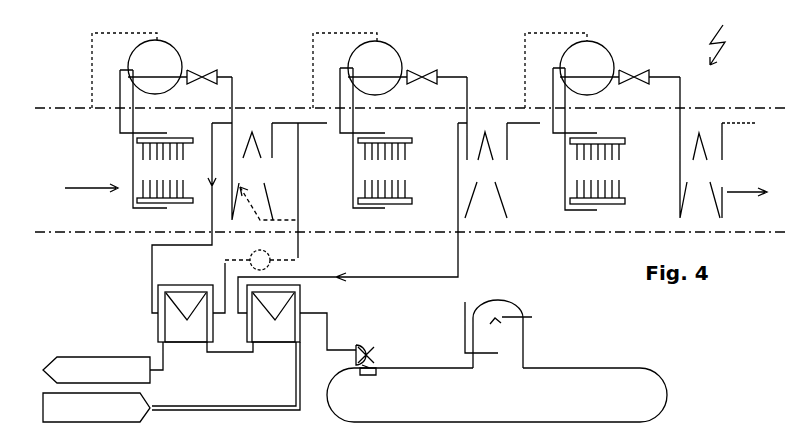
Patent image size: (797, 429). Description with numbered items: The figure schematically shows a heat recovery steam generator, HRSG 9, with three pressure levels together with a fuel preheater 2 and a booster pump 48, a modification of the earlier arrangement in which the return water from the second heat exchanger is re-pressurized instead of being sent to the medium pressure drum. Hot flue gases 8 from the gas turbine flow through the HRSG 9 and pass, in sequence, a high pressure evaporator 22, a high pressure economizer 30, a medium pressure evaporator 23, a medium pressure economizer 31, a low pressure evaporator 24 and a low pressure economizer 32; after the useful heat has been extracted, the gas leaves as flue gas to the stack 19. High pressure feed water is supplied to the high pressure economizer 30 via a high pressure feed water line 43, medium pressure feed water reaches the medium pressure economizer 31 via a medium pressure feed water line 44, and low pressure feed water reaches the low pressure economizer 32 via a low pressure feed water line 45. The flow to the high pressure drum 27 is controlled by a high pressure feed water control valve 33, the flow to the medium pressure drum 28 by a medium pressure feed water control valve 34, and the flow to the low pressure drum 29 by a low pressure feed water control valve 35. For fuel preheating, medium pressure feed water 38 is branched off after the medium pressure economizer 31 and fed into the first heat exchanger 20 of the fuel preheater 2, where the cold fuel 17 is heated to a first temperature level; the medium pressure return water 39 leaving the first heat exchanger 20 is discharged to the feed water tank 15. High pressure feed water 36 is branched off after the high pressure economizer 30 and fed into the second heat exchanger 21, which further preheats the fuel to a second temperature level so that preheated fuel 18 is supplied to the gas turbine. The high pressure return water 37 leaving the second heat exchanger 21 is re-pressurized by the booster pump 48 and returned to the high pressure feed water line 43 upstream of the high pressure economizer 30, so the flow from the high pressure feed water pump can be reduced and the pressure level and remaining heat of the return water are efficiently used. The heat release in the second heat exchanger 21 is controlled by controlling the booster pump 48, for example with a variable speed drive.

The fuel preheater 2 is at (224, 386).
The hot flue gases 8 is at (91, 175).
The HRSG 9 is at (739, 31).
The feed water tank 15 is at (497, 361).
The fuel 17 is at (96, 407).
The preheated fuel 18 is at (96, 370).
The flue gas to the stack 19 is at (747, 180).
The first heat exchanger 20 is at (273, 326).
The second heat exchanger 21 is at (185, 326).
The high pressure evaporator 22 is at (156, 139).
The medium pressure evaporator 23 is at (376, 138).
The low pressure evaporator 24 is at (589, 139).
The high pressure drum 27 is at (137, 70).
The medium pressure drum 28 is at (357, 70).
The low pressure drum 29 is at (569, 70).
The high pressure economizer 30 is at (252, 148).
The medium pressure economizer 31 is at (486, 147).
The low pressure economizer 32 is at (701, 147).
The high pressure feed water control valve 33 is at (207, 64).
The medium pressure feed water control valve 34 is at (434, 64).
The low pressure feed water control valve 35 is at (647, 65).
The high pressure feed water 36 is at (152, 280).
The high pressure return water 37 is at (225, 263).
The medium pressure feed water 38 is at (458, 255).
The medium pressure return water 39 is at (327, 323).
The high pressure feed water line 43 is at (298, 123).
The medium pressure feed water line 44 is at (520, 123).
The low pressure feed water line 45 is at (730, 123).
The booster pump 48 is at (257, 251).